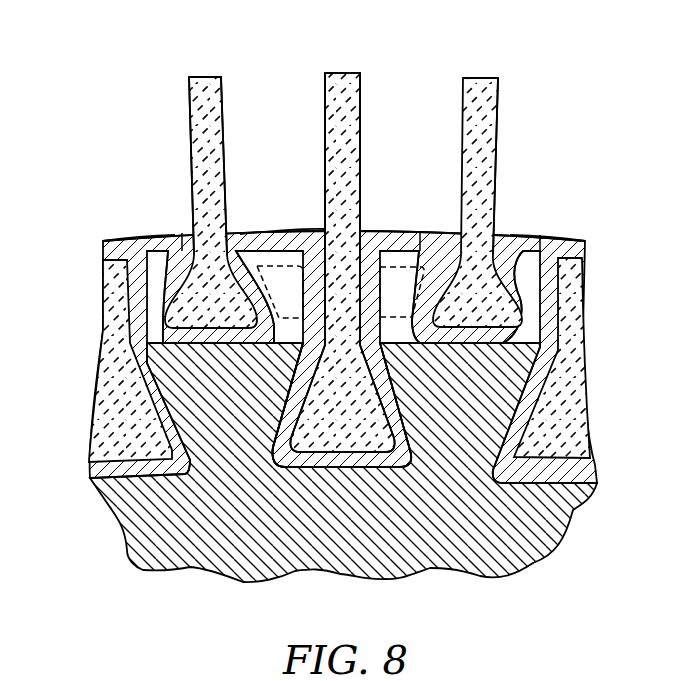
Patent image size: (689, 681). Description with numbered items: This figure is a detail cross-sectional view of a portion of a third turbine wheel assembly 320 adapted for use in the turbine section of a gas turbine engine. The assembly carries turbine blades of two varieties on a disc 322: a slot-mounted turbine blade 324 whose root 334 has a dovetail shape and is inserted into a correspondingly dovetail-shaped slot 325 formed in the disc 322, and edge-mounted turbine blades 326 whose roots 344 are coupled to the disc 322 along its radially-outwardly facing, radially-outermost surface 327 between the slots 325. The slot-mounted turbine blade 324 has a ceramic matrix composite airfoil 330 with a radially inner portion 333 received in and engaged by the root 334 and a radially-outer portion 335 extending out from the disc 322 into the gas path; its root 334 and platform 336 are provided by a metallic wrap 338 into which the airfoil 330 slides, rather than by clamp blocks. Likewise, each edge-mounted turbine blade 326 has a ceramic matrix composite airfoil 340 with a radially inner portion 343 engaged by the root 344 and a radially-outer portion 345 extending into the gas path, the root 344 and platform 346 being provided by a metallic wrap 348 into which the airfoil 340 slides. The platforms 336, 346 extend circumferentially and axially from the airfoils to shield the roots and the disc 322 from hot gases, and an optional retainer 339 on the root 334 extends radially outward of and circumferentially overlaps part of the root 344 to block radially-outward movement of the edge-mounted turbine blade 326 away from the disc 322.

The third turbine wheel assembly 320 is at (98, 65).
The disc 322 is at (562, 582).
The slot-mounted turbine blade 324 is at (300, 97).
The slot 325 is at (308, 468).
The edge-mounted turbine blade 326 is at (170, 125).
The radially-outermost surface 327 is at (165, 342).
The airfoil 330 is at (385, 86).
The radially inner portion 333 is at (370, 412).
The root 334 is at (353, 470).
The radially-outer portion 335 is at (365, 135).
The platform 336 is at (300, 218).
The wrap 338 is at (258, 448).
The retainer 339 is at (412, 250).
The airfoil 340 is at (178, 164).
The radially inner portion 343 is at (162, 237).
The root 344 is at (145, 295).
The radially-outer portion 345 is at (224, 132).
The platform 346 is at (145, 218).
The wrap 348 is at (172, 346).